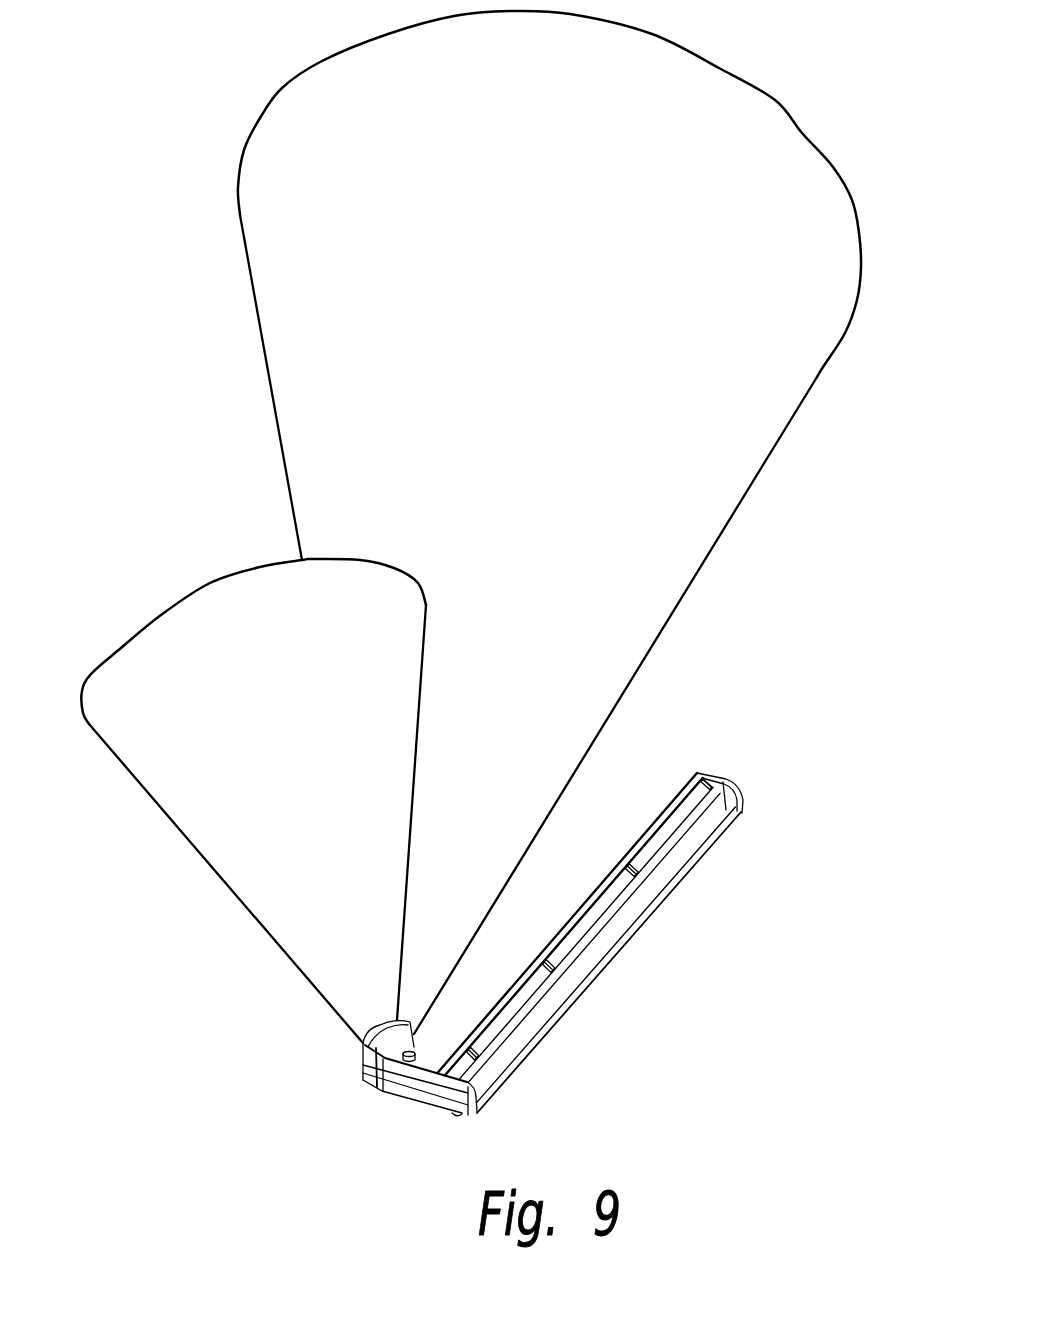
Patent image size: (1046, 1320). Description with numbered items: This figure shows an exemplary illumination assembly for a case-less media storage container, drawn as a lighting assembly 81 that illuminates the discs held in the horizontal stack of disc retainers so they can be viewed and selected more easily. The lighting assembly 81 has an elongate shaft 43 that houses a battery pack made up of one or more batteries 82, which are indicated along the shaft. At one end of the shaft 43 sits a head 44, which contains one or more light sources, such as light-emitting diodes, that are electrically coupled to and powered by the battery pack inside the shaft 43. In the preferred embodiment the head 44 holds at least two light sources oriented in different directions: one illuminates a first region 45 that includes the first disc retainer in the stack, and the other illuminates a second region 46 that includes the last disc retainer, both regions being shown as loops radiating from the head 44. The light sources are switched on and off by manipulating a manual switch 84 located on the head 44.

The shaft 43 is at (697, 845).
The head 44 is at (364, 1055).
The first region 45 is at (253, 860).
The second region 46 is at (687, 503).
The lighting assembly 81 is at (533, 967).
The batteries 82 is at (654, 855).
The manual switch 84 is at (409, 1060).